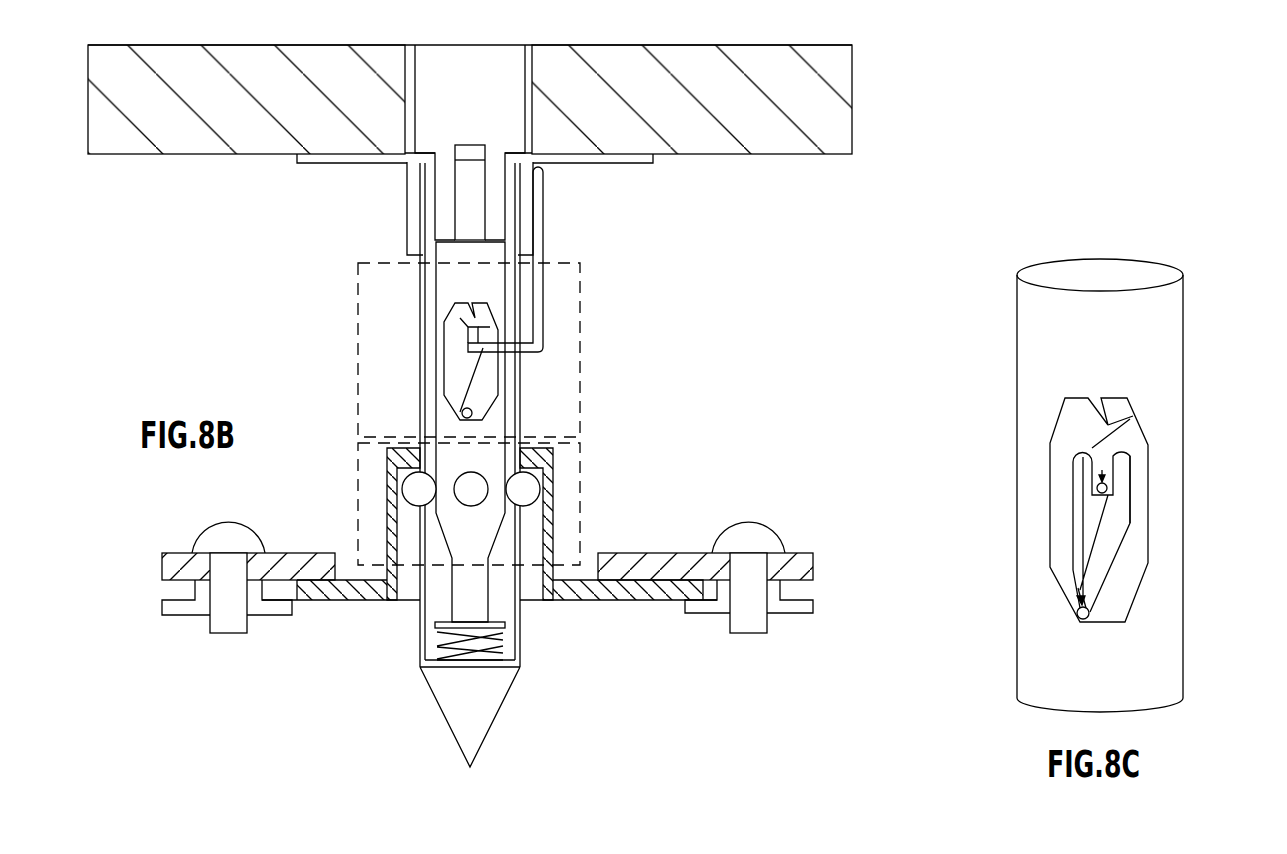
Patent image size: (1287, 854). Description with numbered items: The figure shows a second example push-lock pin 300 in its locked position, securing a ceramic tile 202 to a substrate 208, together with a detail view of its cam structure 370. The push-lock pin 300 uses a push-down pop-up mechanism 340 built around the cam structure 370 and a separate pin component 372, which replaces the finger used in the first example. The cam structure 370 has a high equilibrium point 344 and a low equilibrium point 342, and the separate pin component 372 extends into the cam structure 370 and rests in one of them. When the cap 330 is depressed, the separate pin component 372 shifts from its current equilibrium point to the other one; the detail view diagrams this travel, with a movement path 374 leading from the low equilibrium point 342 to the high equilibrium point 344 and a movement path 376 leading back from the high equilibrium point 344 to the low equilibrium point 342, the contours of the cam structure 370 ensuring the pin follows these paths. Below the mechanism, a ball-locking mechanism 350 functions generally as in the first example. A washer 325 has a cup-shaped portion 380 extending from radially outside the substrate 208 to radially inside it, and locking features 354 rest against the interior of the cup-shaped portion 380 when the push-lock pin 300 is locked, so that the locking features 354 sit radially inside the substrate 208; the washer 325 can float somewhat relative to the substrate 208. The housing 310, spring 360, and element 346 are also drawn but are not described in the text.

In FIG. 8B, the tile 202 is at (838, 60).
In FIG. 8B, the cap 330 is at (489, 68).
In FIG. 8B, the push-lock pin 300 is at (285, 337).
In FIG. 8B, the push-down pop-up mechanism 340 is at (578, 300).
In FIG. 8B, the ball-locking mechanism 350 is at (578, 526).
In FIG. 8B, the cup-shaped portion 380 is at (500, 488).
In FIG. 8B, the spring 360 is at (503, 655).
In FIG. 8B, the housing 310 is at (553, 452).
In FIG. 8B, the locking features 354 is at (541, 490).
In FIG. 8B, the separate pin component 372 is at (541, 330).
In FIG. 8B, the high equilibrium point 344 is at (470, 345).
In FIG. 8B, the cam structure 370 is at (485, 400).
In FIG. 8C, the cam structure 370 is at (1125, 578).
In FIG. 8B, the low equilibrium point 342 is at (462, 410).
In FIG. 8C, the low equilibrium point 342 is at (1078, 614).
In FIG. 8B, the substrate 208 is at (797, 553).
In FIG. 8B, the washer 325 is at (640, 598).
In FIG. 8C, the movement path 376 is at (1073, 537).
In FIG. 8C, the movement path 374 is at (1130, 508).
In FIG. 8C, the pin hole 346 is at (1105, 488).